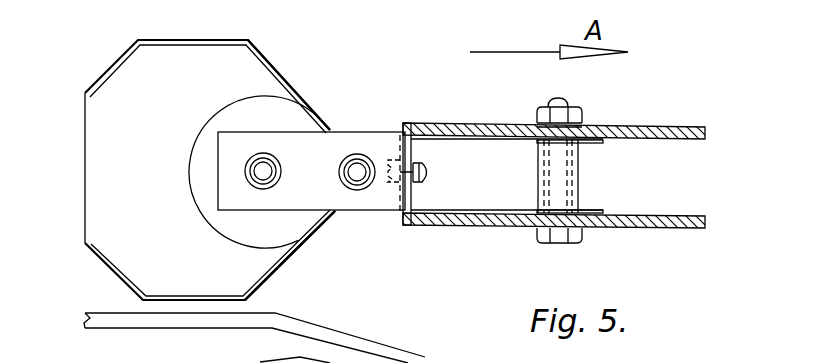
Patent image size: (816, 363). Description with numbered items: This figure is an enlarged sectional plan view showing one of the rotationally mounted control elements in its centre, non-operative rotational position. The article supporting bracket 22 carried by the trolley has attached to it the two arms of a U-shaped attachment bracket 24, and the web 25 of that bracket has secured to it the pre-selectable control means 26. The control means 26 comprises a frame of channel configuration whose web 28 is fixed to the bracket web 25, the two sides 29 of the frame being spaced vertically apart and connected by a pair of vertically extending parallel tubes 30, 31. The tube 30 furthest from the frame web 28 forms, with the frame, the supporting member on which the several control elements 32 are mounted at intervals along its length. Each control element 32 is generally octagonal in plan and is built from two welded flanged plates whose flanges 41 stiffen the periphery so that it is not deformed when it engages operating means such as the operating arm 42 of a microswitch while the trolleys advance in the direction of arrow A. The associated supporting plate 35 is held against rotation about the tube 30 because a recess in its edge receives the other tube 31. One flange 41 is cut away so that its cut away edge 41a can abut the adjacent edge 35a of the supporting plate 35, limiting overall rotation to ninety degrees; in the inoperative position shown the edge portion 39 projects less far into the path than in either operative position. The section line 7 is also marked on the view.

The section line 7- 7 is at (155, 168).
The article supporting bracket 22 is at (446, 124).
The U-shaped attachment bracket 24 is at (379, 136).
The web 25 is at (412, 195).
The pre-selectable control means 26 is at (358, 64).
The web 28 is at (406, 128).
The sides 29 is at (300, 154).
The tube 30 is at (258, 172).
The tube 31 is at (358, 180).
The pre-selectable control element 32 is at (113, 168).
The supporting plate 35 is at (232, 227).
The edge of supporting plate 35a is at (320, 232).
The edge portion 39 is at (268, 283).
The flange 41 is at (196, 35).
The cut away edge 41a is at (292, 96).
The operating arm 42 is at (387, 348).